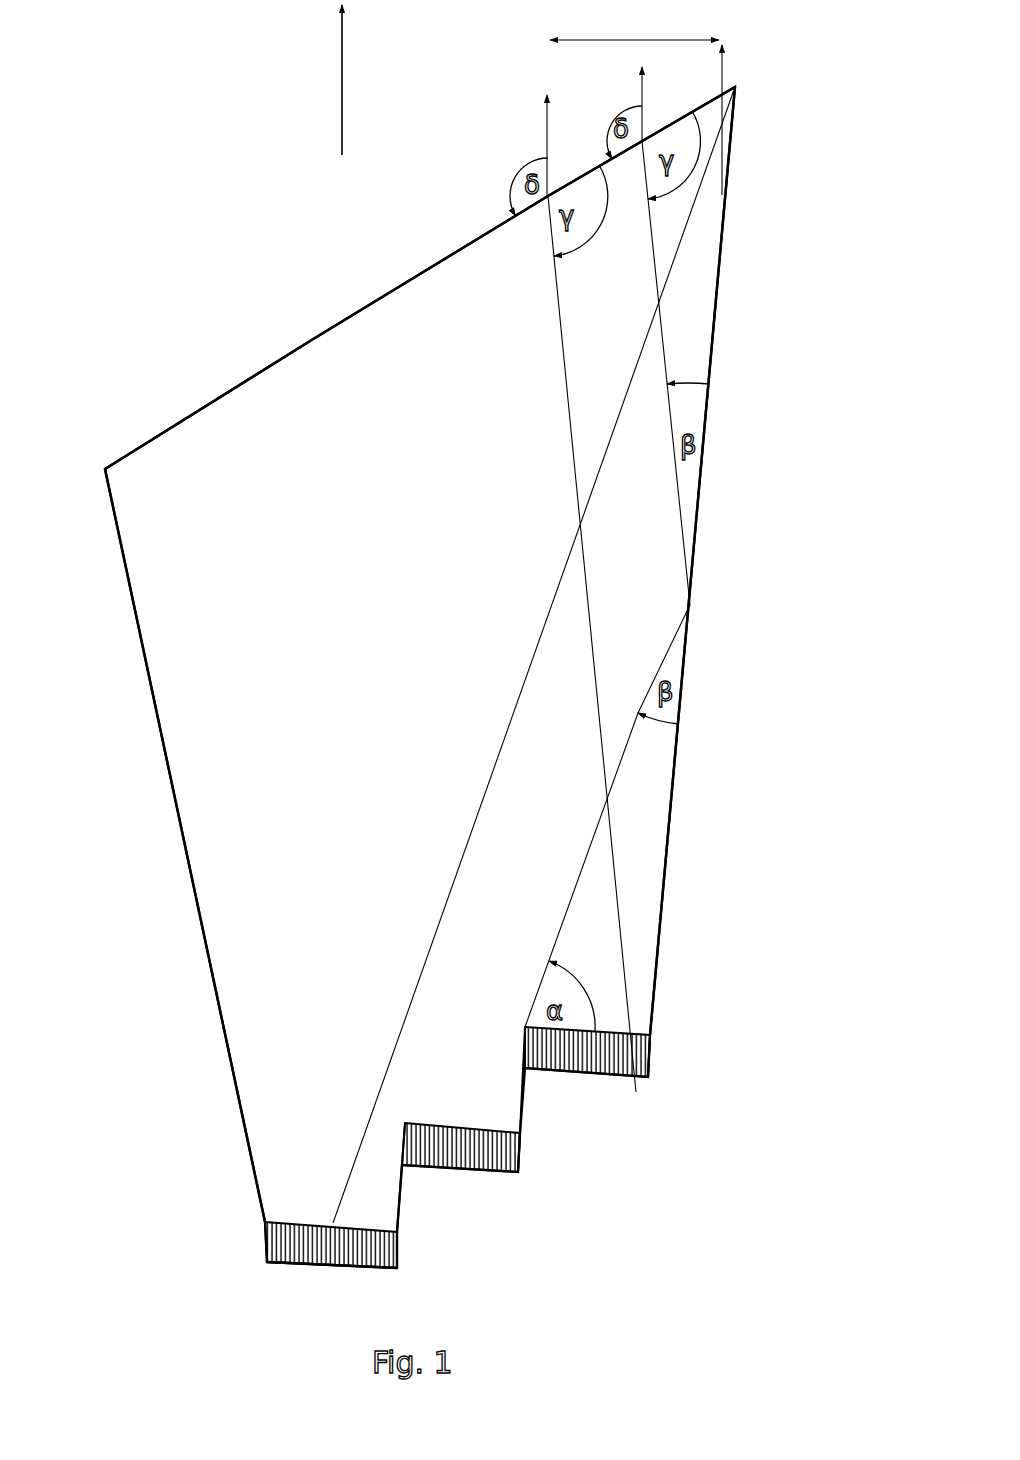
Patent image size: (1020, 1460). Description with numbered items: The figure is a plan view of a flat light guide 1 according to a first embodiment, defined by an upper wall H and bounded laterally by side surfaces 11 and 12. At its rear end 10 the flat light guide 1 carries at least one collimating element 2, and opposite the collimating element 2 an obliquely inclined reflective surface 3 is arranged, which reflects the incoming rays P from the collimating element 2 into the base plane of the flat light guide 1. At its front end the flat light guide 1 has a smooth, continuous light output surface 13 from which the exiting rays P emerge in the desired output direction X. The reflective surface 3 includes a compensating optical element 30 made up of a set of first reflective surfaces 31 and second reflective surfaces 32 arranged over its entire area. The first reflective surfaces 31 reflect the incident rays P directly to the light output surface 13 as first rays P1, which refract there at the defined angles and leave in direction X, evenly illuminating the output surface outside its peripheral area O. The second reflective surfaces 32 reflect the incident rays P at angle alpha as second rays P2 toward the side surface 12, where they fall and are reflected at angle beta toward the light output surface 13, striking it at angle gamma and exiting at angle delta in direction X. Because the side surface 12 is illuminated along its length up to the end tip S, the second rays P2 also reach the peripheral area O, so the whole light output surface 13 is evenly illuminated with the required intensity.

The flat light guide 1 is at (215, 697).
The collimating element 2 is at (572, 1093).
The reflective surface 3 is at (505, 1157).
The rear end 10 is at (347, 1282).
The side surface 11 is at (207, 963).
The side surface 12 is at (692, 624).
The light output surface 13 is at (338, 325).
The compensating optical element 30 is at (331, 1245).
The first reflective surfaces 31 is at (461, 1147).
The second reflective surfaces 32 is at (587, 1052).
The light rays P is at (640, 107).
The first rays P1 is at (557, 322).
The second rays P2 is at (773, 787).
The peripheral area O is at (636, 100).
The desired output direction X is at (325, 80).
The end tip S is at (742, 115).
The upper wall H is at (197, 467).